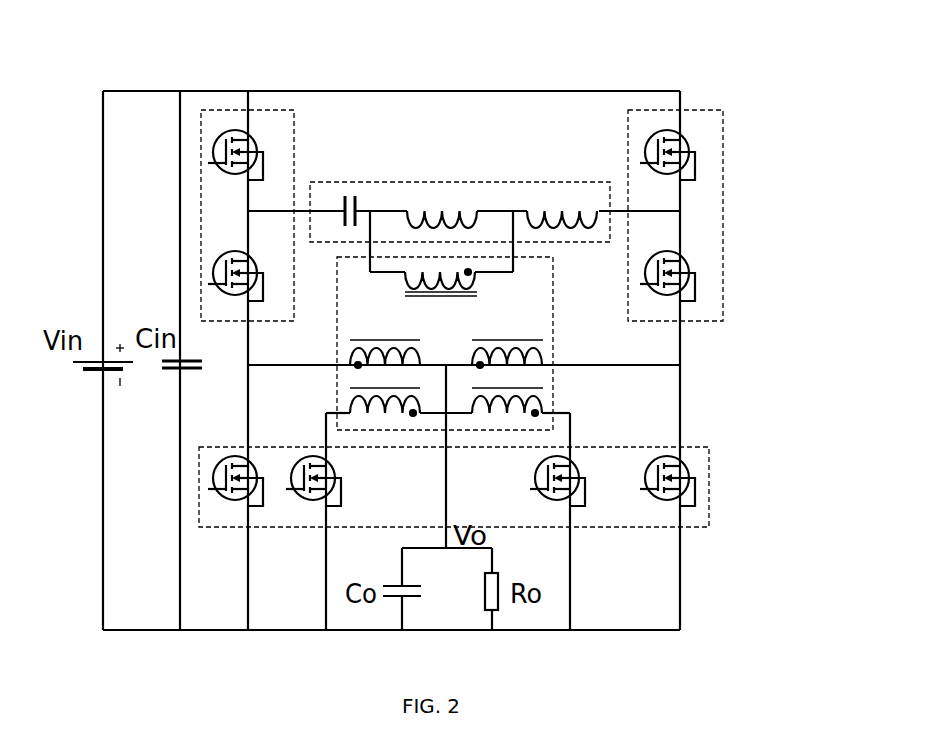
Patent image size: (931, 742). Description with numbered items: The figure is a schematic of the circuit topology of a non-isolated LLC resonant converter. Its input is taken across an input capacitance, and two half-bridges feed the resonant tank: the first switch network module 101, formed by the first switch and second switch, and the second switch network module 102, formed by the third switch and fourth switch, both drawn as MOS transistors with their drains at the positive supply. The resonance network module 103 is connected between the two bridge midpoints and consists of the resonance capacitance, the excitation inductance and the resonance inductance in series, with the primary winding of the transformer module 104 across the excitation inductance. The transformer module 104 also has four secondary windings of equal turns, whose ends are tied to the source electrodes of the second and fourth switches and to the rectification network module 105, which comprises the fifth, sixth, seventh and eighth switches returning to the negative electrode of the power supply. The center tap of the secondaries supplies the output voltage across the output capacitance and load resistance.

The first switch network module 101 is at (233, 110).
The second switch network module 102 is at (650, 110).
The resonance network module 103 is at (463, 182).
The transformer module 104 is at (553, 343).
The rectification network module 105 is at (709, 490).